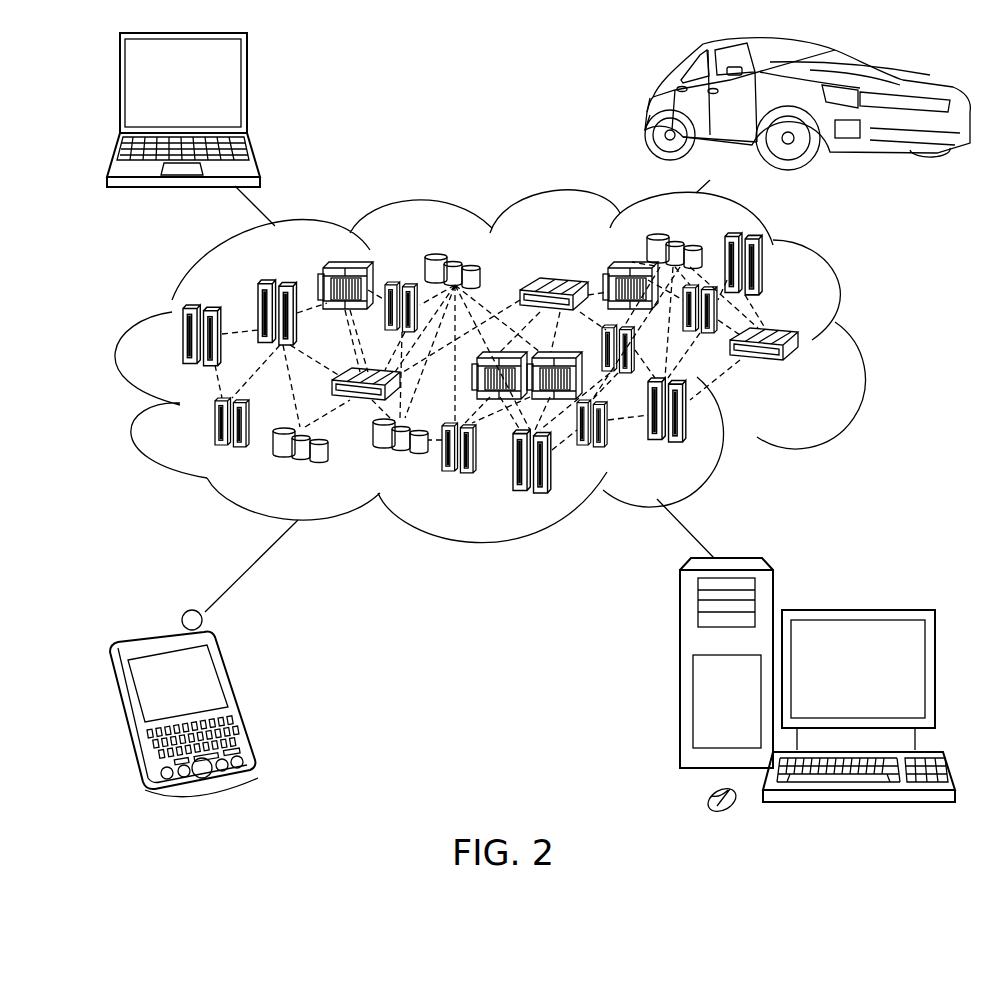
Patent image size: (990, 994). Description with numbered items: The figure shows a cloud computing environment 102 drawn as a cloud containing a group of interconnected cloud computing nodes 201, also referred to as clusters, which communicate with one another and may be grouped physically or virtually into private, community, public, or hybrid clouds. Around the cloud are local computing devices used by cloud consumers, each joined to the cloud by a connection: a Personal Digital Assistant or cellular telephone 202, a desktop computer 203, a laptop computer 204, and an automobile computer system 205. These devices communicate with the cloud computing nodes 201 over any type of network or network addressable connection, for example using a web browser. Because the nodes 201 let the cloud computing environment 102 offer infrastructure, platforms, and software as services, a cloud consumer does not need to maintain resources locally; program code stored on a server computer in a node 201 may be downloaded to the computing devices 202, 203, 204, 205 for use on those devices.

The cloud computing environment 102 is at (855, 343).
The cloud computing nodes 201 is at (812, 375).
The Personal Digital Assistant (PDA) or cellular telephone 202 is at (238, 698).
The desktop computer 203 is at (853, 610).
The laptop computer 204 is at (247, 89).
The automobile computer system 205 is at (648, 105).